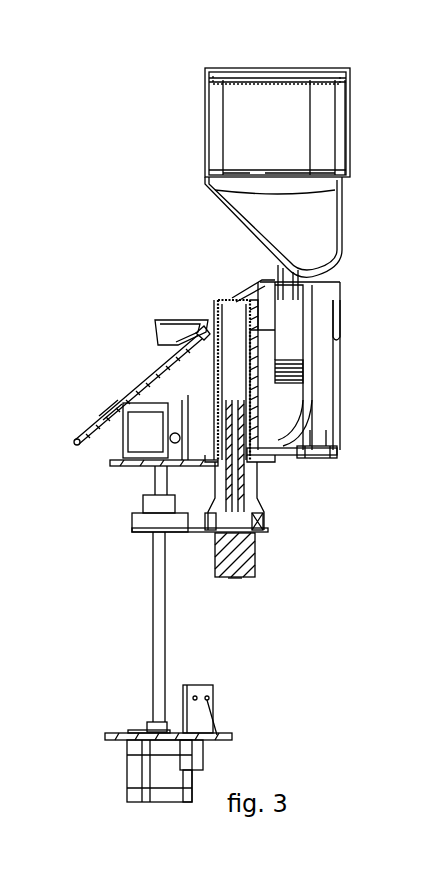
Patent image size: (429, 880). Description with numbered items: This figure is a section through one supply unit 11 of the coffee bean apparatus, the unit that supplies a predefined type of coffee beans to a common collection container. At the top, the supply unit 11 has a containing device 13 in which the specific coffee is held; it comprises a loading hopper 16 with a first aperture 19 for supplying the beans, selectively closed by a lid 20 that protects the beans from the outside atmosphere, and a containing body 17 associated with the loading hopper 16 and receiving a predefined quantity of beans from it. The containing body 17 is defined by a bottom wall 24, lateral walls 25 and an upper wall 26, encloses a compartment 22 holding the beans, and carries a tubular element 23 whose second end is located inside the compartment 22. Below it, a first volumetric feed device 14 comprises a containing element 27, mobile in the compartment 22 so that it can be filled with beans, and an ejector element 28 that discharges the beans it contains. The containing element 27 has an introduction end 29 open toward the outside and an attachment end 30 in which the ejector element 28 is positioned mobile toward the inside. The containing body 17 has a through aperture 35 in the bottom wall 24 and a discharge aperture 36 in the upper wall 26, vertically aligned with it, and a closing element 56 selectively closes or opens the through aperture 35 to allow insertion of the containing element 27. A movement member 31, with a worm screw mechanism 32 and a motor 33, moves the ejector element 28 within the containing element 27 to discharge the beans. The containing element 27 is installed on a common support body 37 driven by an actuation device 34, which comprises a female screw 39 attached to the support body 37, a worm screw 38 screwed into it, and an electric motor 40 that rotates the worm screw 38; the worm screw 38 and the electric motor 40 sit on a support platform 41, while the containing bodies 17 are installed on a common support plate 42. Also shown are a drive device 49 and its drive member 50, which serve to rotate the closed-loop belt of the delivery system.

The supply unit 11 is at (192, 46).
The containing device 13 is at (350, 249).
The first volumetric feed device 14 is at (220, 292).
The loading hopper 16 is at (342, 128).
The containing body 17 is at (326, 352).
The first aperture 19 is at (314, 79).
The lid 20 is at (263, 72).
The compartment 22 is at (282, 426).
The tubular element 23 is at (292, 330).
The bottom wall 24 is at (277, 449).
The lateral walls 25 is at (323, 377).
The upper wall 26 is at (250, 299).
The containing element 27 is at (216, 312).
The ejector element 28 is at (248, 473).
The introduction end 29 is at (228, 299).
The attachment end 30 is at (263, 524).
The movement member 31 is at (235, 579).
The worm screw mechanism 32 is at (207, 485).
The motor 33 is at (239, 548).
The actuation device 34 is at (99, 738).
The through aperture 35 is at (164, 368).
The discharge aperture 36 is at (212, 318).
The support body 37 is at (190, 531).
The worm screw 38 is at (157, 669).
The female screw 39 is at (140, 520).
The electric motor 40 is at (137, 783).
The support platform 41 is at (218, 735).
The support plate 42 is at (113, 462).
The drive device 49 is at (120, 434).
The drive member 50 is at (139, 432).
The closing element 56 is at (316, 448).